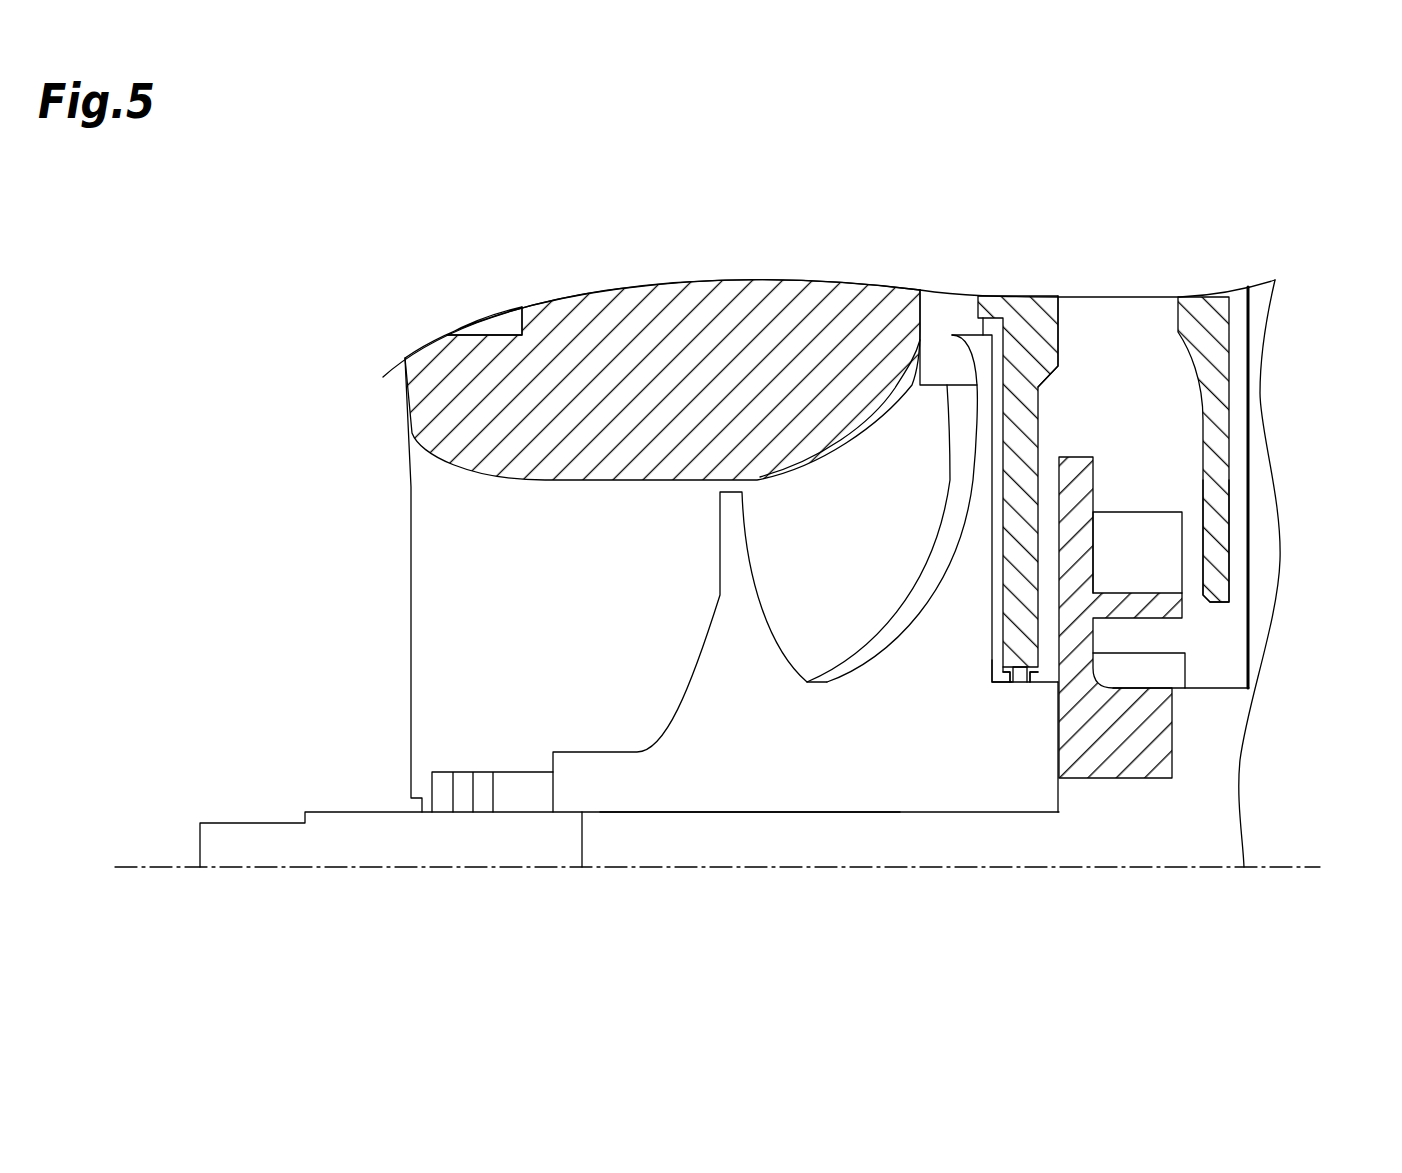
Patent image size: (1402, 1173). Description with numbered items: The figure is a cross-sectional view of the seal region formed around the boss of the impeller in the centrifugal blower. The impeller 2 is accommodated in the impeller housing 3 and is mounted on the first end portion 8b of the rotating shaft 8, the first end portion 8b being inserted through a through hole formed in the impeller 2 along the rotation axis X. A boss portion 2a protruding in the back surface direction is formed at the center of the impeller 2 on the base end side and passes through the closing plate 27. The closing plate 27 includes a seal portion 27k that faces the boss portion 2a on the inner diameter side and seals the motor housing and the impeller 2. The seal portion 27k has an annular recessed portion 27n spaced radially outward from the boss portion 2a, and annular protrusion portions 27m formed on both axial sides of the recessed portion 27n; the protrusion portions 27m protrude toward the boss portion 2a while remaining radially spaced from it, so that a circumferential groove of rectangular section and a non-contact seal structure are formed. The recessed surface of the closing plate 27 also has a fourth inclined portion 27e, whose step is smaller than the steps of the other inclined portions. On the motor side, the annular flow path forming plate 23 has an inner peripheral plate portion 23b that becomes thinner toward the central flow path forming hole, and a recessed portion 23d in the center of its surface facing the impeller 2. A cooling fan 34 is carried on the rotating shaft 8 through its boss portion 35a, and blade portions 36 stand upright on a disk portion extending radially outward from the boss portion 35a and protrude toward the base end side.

The impeller 2 is at (680, 686).
The boss portion 2a is at (1048, 722).
The impeller housing 3 is at (400, 415).
The rotating shaft 8 is at (627, 804).
The first end portion 8b is at (768, 848).
The rotation axis X is at (440, 868).
The flow path forming plate 23 is at (1246, 425).
The inner peripheral plate portion 23b is at (1220, 504).
The recessed portion 23d is at (1202, 447).
The closing plate 27 is at (1014, 290).
The fourth inclined portion 27e is at (1059, 387).
The seal portion 27k is at (984, 684).
The protrusion portion 27m is at (1007, 686).
The recessed portion 27n is at (1020, 686).
The cooling fan 34 is at (1184, 755).
The boss portion 35a is at (1174, 700).
The blade portions 36 is at (1138, 510).